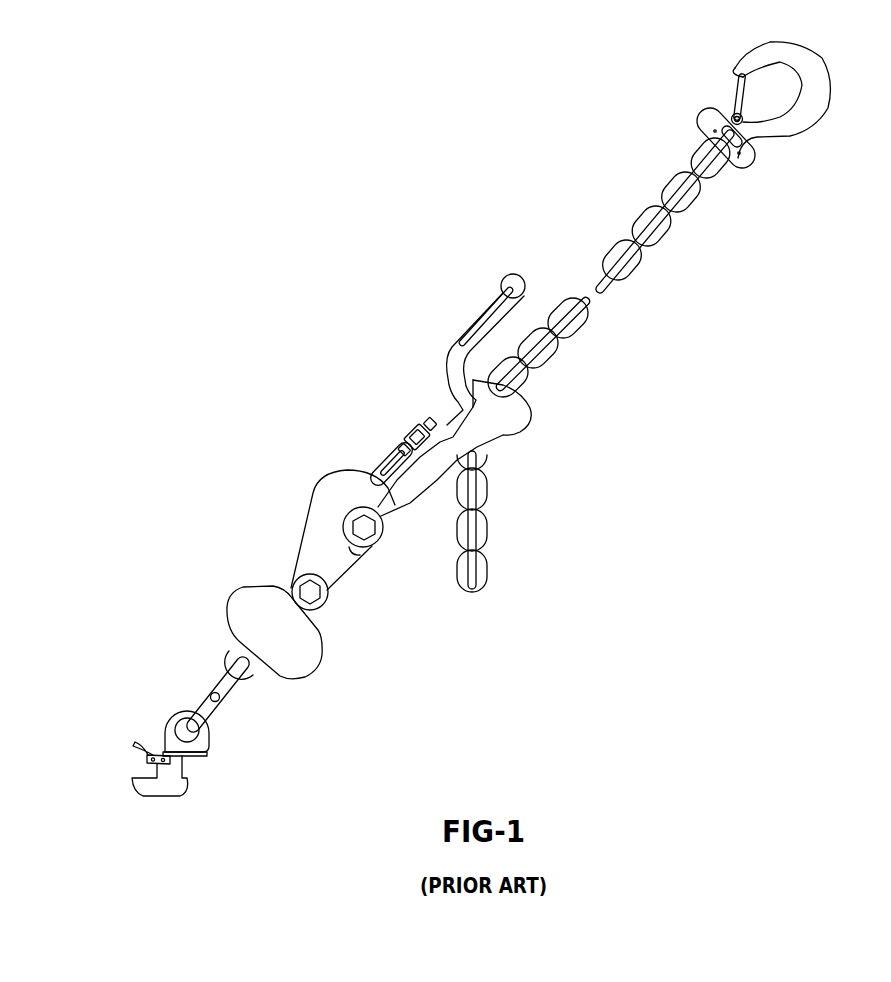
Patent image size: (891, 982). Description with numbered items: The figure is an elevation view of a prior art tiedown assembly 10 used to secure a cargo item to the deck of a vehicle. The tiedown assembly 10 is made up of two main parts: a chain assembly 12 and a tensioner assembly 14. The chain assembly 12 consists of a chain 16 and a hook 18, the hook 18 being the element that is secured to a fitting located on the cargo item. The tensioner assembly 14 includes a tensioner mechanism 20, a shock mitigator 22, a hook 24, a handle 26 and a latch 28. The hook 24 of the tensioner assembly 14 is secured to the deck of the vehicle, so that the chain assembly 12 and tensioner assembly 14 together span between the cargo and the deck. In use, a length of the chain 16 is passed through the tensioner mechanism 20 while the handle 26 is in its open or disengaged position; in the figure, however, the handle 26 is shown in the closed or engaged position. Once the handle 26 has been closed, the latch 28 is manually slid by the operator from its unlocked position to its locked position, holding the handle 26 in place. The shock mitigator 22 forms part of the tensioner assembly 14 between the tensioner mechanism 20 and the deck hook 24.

The tiedown assembly 10 is at (697, 596).
The chain assembly 12 is at (678, 282).
The tensioner assembly 14 is at (252, 475).
The chain 16 is at (603, 249).
The hook 18 is at (733, 73).
The tensioner mechanism 20 is at (537, 418).
The shock mitigator 22 is at (322, 667).
The hook 24 is at (208, 743).
The handle 26 is at (455, 338).
The latch 28 is at (406, 428).